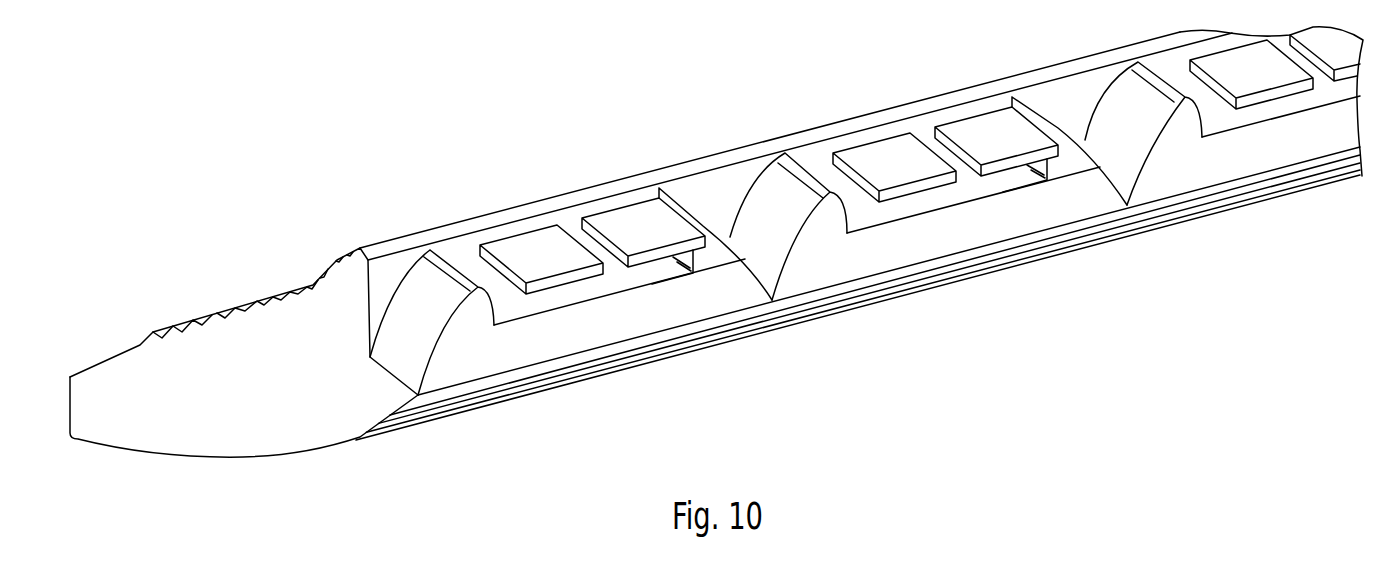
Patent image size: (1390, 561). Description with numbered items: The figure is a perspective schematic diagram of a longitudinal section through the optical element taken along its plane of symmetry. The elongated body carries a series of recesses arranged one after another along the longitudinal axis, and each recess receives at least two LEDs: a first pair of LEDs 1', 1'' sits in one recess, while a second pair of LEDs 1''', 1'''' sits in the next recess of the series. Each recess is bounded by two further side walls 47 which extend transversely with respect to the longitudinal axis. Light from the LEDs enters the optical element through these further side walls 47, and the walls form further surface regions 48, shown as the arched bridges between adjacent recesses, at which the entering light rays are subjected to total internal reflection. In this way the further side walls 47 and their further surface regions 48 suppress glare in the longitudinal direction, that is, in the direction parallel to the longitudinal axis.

The further side wall 47 is at (473, 323).
The further surface region 48 is at (420, 297).
The LED 1' is at (541, 232).
The LED 1'' is at (643, 213).
The LED 1''' is at (894, 140).
The LED 1'''' is at (996, 122).